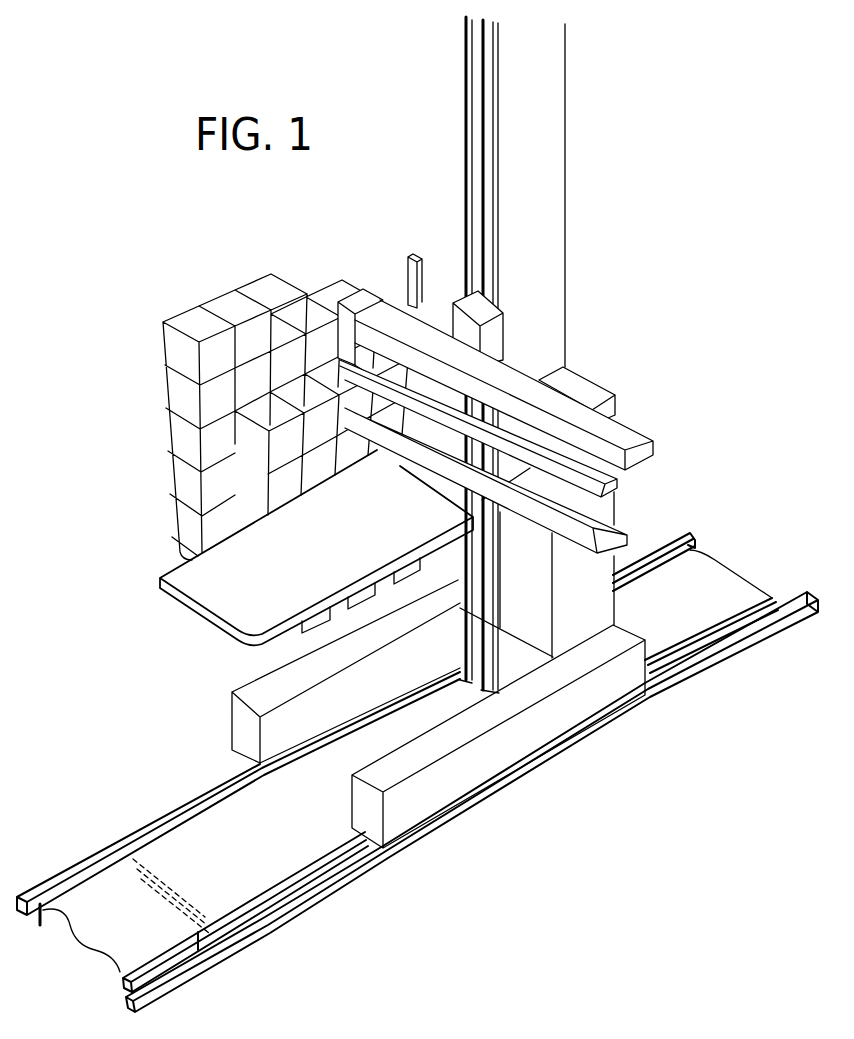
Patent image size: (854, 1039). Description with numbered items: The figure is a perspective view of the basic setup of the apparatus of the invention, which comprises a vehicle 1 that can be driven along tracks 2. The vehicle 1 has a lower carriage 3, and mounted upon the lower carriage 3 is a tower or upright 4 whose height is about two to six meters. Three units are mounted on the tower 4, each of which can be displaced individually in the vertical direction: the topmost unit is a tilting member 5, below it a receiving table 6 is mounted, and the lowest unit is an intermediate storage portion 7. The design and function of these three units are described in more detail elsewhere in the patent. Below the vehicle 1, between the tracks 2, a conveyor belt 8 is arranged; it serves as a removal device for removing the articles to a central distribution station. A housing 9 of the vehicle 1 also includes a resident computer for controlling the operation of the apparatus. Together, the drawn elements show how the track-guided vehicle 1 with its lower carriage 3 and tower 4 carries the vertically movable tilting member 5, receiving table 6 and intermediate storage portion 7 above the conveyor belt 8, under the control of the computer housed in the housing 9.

The vehicle 1 is at (722, 308).
The tracks 2 is at (212, 793).
The lower carriage 3 is at (262, 698).
The tower 4 is at (548, 137).
The tilting member 5 is at (675, 443).
The receiving table 6 is at (668, 496).
The intermediate storage portion 7 is at (132, 584).
The conveyor belt 8 is at (278, 860).
The housing 9 is at (597, 391).